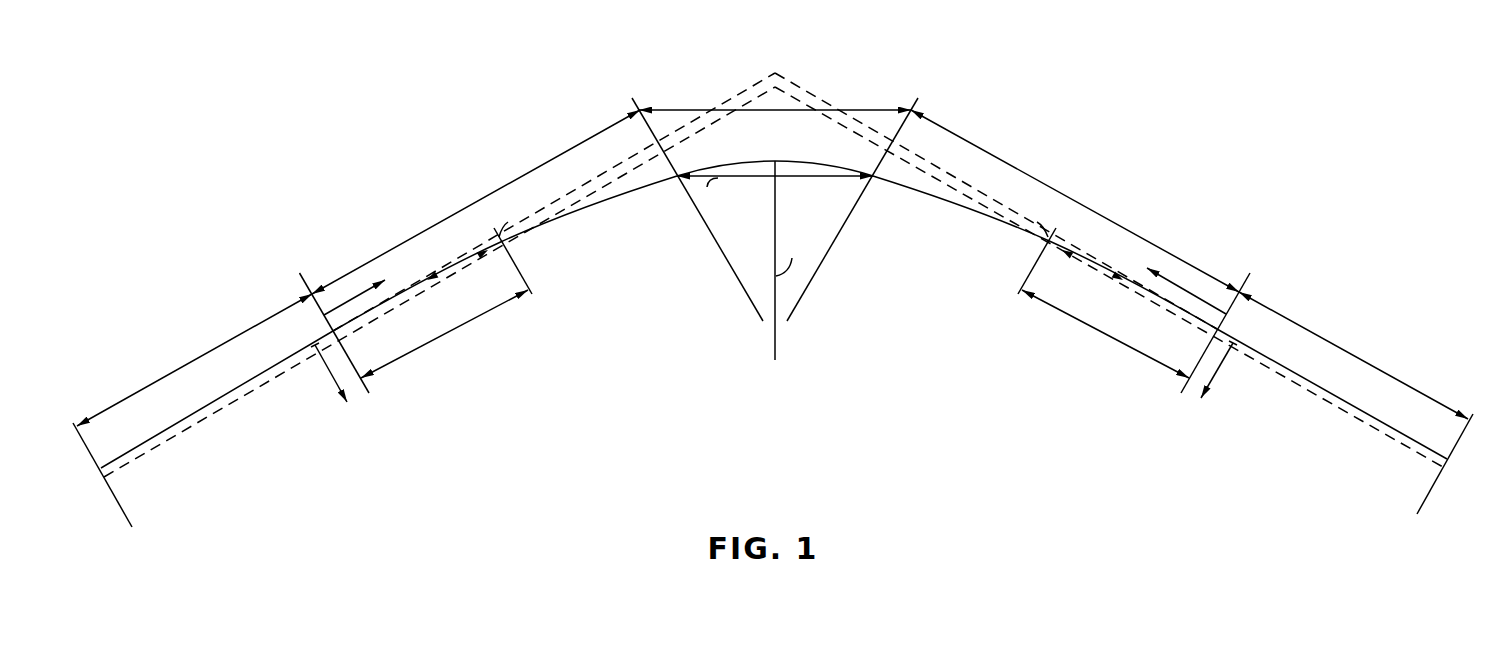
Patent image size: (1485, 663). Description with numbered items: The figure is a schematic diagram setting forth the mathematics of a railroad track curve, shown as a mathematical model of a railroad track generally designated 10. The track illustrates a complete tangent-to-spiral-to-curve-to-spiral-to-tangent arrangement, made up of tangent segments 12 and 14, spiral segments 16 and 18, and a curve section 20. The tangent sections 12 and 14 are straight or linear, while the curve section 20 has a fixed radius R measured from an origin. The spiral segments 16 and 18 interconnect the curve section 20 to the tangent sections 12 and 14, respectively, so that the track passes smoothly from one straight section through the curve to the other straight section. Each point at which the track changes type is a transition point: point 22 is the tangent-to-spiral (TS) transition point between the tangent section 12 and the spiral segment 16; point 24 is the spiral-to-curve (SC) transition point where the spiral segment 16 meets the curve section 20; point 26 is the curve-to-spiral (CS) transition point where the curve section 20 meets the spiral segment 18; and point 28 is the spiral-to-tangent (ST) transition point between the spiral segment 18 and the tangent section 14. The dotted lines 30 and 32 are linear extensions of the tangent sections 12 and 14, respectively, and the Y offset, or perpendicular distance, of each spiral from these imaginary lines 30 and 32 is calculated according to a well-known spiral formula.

The mathematical model of a railroad track 10 is at (1106, 107).
The tangent segment 12 is at (229, 398).
The tangent segment 14 is at (1318, 386).
The spiral segment 16 is at (579, 208).
The spiral segment 18 is at (968, 208).
The curve section 20 is at (762, 159).
The tangent-to-spiral transition point 22 is at (333, 332).
The spiral-to-curve transition point 24 is at (677, 179).
The curve-to-spiral transition point 26 is at (873, 179).
The spiral-to-tangent transition point 28 is at (1219, 328).
The dotted line 30 is at (619, 163).
The dotted line 32 is at (946, 168).